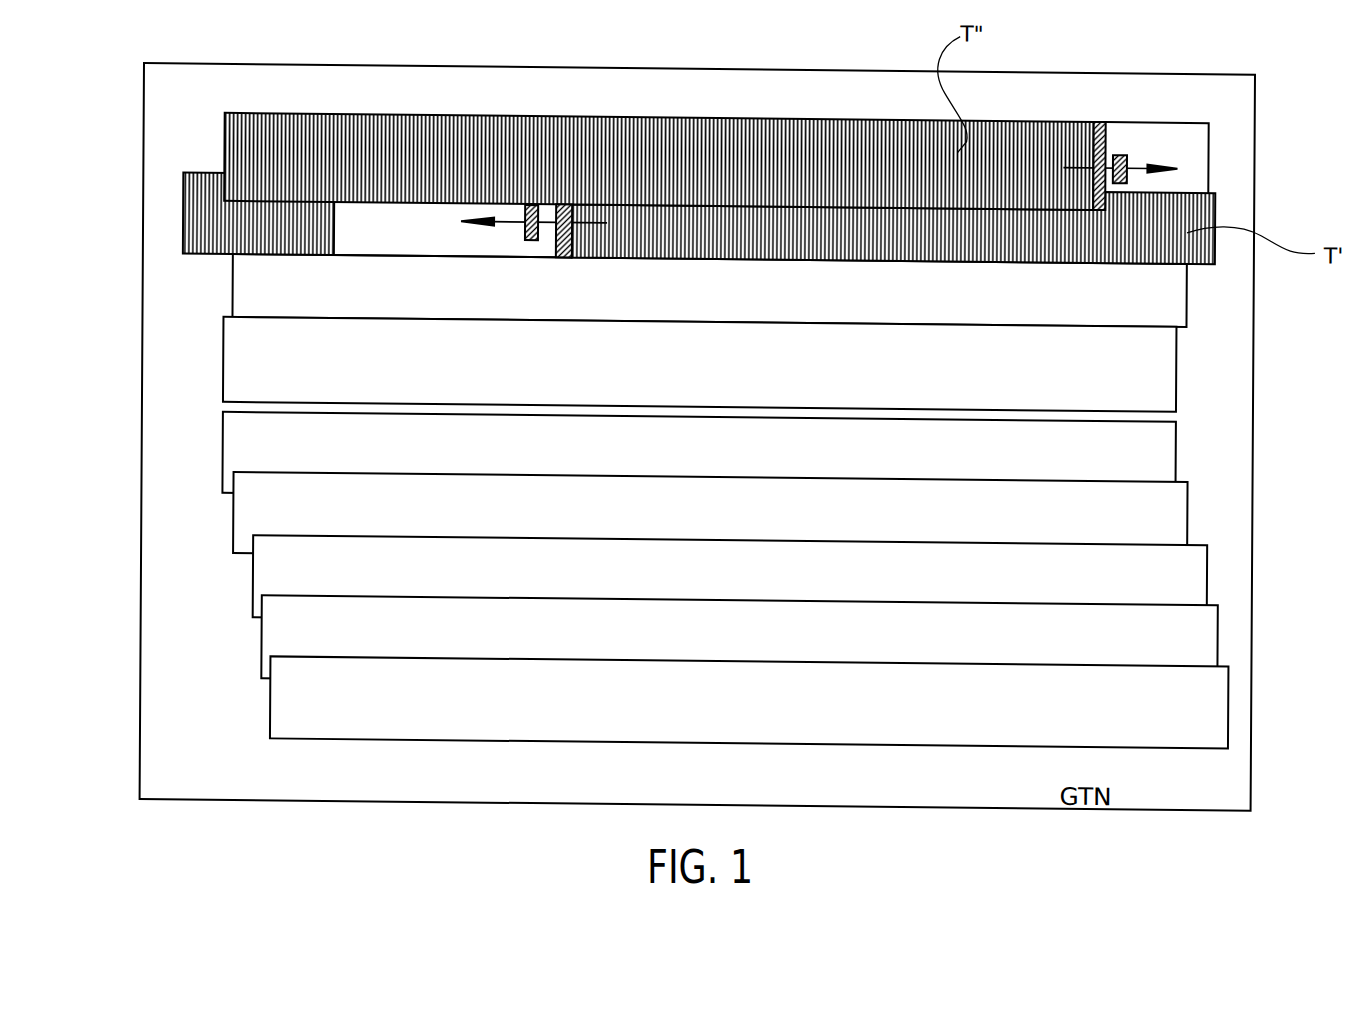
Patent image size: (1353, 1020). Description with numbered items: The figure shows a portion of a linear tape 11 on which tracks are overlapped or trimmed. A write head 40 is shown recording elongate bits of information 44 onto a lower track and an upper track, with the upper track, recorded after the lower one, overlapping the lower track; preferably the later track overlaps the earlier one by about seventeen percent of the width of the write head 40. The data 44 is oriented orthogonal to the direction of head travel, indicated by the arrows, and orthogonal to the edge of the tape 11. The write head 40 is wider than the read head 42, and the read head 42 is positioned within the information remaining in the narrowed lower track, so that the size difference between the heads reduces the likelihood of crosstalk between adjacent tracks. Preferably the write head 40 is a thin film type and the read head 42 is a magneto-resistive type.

The linear tape 11 is at (1218, 506).
The write head 40 is at (1094, 117).
The read head 42 is at (1121, 140).
The elongate bits of information 44 is at (808, 143).